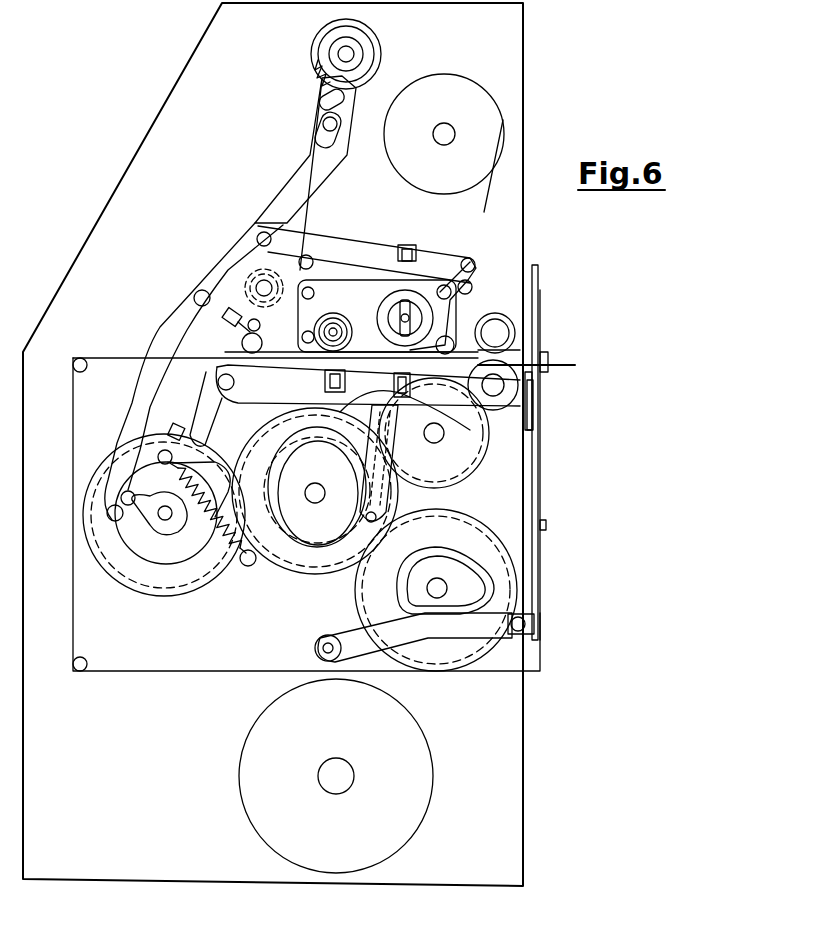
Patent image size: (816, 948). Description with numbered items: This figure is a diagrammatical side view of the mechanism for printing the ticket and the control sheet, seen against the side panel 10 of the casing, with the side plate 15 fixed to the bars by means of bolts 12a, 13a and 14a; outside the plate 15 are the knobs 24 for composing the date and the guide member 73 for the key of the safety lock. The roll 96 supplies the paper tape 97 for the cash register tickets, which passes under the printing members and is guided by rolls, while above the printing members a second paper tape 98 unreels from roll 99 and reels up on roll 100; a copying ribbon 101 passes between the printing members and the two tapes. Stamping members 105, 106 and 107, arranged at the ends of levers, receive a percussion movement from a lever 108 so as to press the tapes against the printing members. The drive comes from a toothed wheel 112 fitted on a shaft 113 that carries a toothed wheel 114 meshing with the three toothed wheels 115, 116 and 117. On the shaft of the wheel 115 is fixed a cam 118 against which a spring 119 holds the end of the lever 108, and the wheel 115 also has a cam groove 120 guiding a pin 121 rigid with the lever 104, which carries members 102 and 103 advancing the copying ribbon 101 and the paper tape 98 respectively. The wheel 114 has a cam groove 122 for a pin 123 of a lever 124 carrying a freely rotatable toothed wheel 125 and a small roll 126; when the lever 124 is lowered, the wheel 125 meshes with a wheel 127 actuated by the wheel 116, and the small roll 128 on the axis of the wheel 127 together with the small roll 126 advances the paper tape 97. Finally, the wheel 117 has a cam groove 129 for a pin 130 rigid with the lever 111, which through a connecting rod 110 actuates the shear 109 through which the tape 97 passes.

The side panel 10 is at (150, 137).
The roll 100 is at (360, 53).
The advancement member 103 is at (322, 98).
The advancement member 102 is at (252, 316).
The lever 104 is at (178, 317).
The roll 99 is at (483, 107).
The second paper tape 98 is at (447, 262).
The stamping member 105 is at (410, 245).
The side plate 15 is at (327, 290).
The copying ribbon 101 is at (276, 282).
The bolt 12a is at (270, 320).
The bolt 13a is at (302, 338).
The knob 24 is at (344, 322).
The guide member 73 is at (434, 317).
The bolt 14a is at (452, 293).
The toothed wheel 125 is at (507, 322).
The small roll 126 is at (510, 330).
The shear 109 is at (540, 338).
The lever 124 is at (500, 348).
The small roll 128 is at (520, 388).
The wheel 127 is at (498, 410).
The connecting rod 110 is at (541, 473).
The paper tape 97 is at (100, 357).
The lever 108 is at (203, 404).
The stamping member 106 is at (325, 380).
The stamping member 107 is at (412, 393).
The toothed wheel 114 is at (303, 575).
The toothed wheel 112 is at (285, 535).
The cam groove 122 is at (338, 545).
The shaft 113 is at (315, 503).
The pin 123 is at (377, 517).
The toothed wheel 116 is at (486, 470).
The toothed wheel 117 is at (468, 668).
The cam groove 129 is at (490, 578).
The pin 130 is at (437, 606).
The lever 111 is at (491, 632).
The roll 96 is at (422, 752).
The toothed wheel 115 is at (200, 590).
The cam groove 120 is at (138, 560).
The cam 118 is at (158, 532).
The pin 121 is at (106, 512).
The spring 119 is at (227, 548).